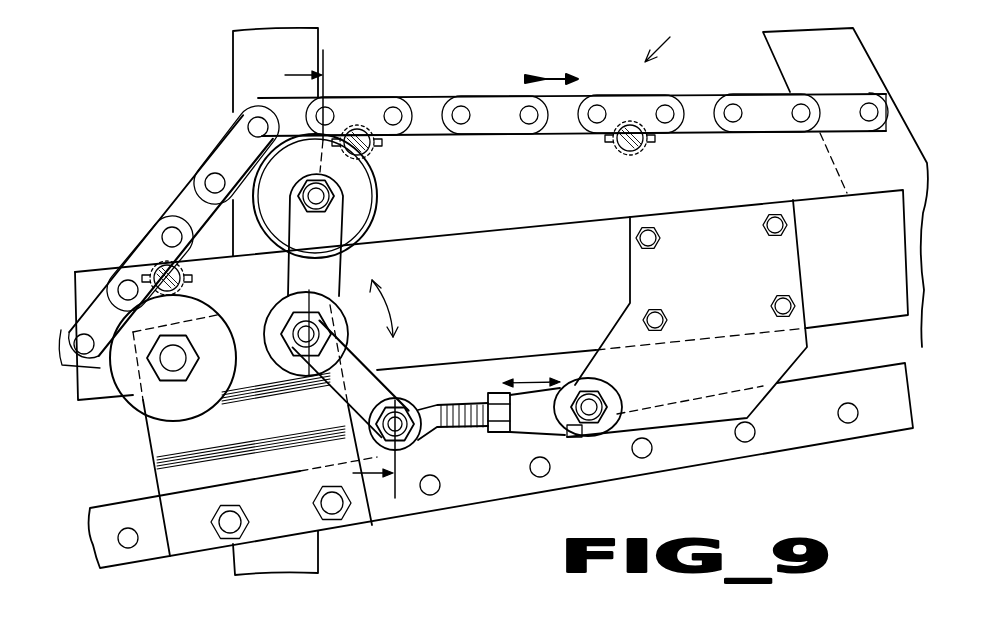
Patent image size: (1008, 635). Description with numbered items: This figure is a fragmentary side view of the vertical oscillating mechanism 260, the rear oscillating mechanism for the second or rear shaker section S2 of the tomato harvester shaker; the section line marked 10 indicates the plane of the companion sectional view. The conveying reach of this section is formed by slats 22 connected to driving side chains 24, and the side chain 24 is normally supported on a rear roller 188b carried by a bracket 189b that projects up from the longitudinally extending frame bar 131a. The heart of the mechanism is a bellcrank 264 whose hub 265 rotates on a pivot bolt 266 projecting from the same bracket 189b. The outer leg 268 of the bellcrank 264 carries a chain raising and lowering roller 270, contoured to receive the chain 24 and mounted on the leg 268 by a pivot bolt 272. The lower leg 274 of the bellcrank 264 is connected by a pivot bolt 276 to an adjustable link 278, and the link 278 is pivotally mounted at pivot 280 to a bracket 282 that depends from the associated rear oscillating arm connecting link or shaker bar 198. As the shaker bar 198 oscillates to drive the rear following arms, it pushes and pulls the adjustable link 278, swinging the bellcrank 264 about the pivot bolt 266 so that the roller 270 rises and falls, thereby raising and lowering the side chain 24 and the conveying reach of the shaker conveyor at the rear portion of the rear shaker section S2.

The vertical oscillating mechanism 260 is at (417, 72).
The rear shaker section S2 is at (607, 48).
The section line 10 is at (357, 274).
The side chain 24 is at (228, 148).
The slat 22 is at (372, 152).
The chain raising and lowering roller 270 is at (356, 212).
The pivot bolt 272 is at (318, 200).
The shaker bar 198 is at (550, 237).
The outer leg 268 is at (343, 270).
The bracket 282 is at (633, 278).
The bellcrank 264 is at (362, 358).
The lower leg 274 is at (400, 385).
The pivot 280 is at (595, 405).
The pivot bolt 266 is at (292, 364).
The hub 265 is at (312, 368).
The pivot bolt 276 is at (397, 432).
The adjustable link 278 is at (540, 420).
The rear roller 188b is at (148, 400).
The bracket 189b is at (167, 477).
The frame bar 131a is at (447, 500).